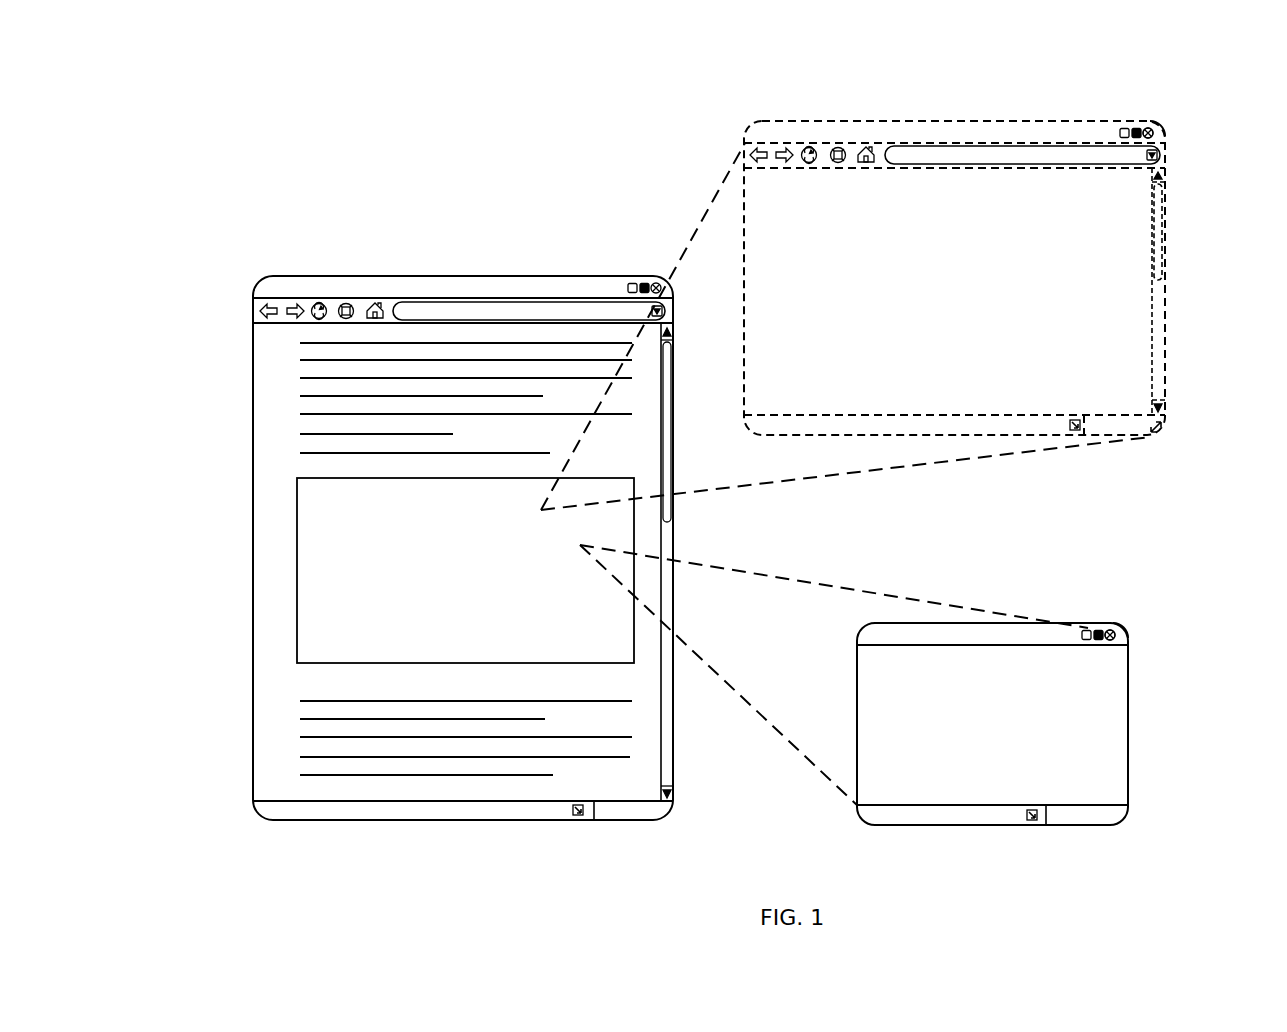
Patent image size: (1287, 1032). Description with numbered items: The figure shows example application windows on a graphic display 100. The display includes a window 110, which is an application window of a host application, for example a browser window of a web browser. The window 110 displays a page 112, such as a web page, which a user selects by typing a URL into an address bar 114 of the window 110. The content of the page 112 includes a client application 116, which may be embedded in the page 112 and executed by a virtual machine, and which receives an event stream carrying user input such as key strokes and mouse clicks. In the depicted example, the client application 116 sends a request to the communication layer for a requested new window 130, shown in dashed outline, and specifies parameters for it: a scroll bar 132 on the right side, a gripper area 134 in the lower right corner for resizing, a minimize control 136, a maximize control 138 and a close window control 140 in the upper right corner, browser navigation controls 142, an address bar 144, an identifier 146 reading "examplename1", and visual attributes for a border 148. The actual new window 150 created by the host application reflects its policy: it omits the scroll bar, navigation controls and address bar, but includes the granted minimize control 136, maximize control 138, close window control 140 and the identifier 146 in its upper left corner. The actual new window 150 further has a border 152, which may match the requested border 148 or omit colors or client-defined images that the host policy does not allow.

The graphic display 100 is at (168, 98).
The window 110 is at (224, 251).
The page 112 is at (277, 363).
The address bar 114 is at (532, 300).
The client application 116 is at (315, 626).
The requested new window 130 is at (1193, 177).
The scroll bar 132 is at (1155, 258).
The gripper area 134 is at (1155, 425).
The minimize control 136 is at (1120, 125).
The maximize control 138 is at (1148, 125).
The close window control 140 is at (1165, 140).
The browser navigation controls 142 is at (800, 157).
The address bar 144 is at (1040, 155).
The identifier 146 is at (810, 133).
The border 148 is at (970, 133).
The actual new window 150 is at (1151, 739).
The border 152 is at (975, 628).